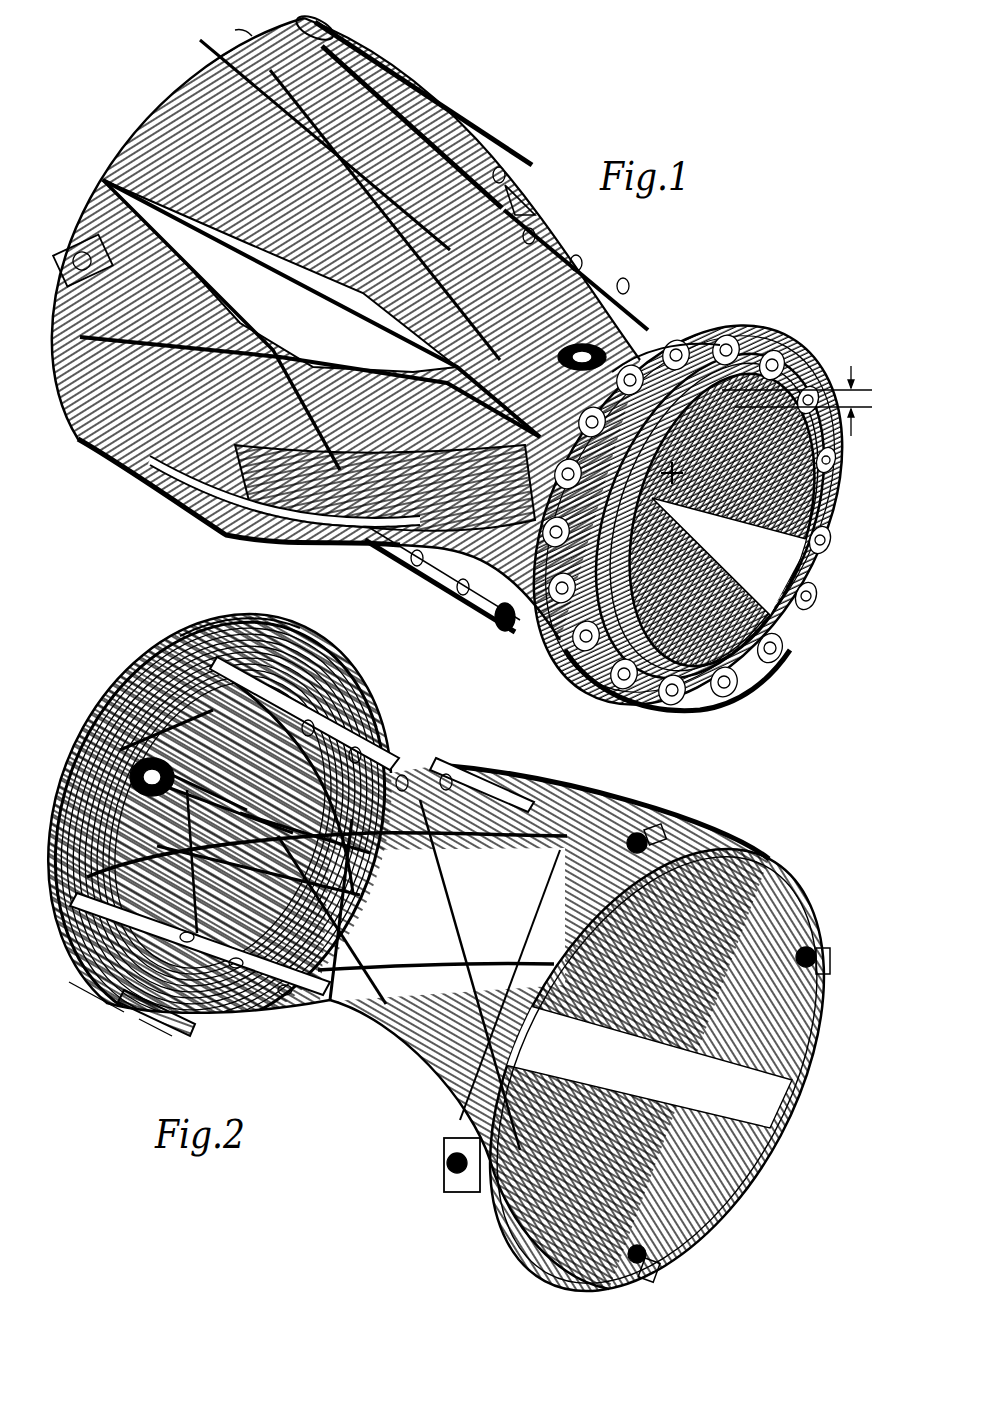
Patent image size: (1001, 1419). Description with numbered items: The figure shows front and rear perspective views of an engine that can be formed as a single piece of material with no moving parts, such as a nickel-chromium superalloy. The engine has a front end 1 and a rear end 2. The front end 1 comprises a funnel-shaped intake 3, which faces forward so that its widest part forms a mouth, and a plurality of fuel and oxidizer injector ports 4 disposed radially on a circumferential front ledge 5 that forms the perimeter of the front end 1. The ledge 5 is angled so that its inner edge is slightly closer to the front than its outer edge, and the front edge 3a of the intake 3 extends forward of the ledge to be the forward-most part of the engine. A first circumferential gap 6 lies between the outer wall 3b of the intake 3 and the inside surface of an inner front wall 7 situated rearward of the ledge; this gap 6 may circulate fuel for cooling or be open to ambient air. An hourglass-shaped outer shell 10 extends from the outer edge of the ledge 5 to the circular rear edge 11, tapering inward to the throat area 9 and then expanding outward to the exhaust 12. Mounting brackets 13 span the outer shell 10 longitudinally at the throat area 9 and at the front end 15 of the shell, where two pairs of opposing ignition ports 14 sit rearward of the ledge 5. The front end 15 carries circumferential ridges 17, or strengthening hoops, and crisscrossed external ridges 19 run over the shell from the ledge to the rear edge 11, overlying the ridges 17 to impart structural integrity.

In FIG. 1, the front end 1 is at (806, 598).
In FIG. 2, the front end 1 is at (86, 722).
In FIG. 1, the rear end 2 is at (96, 160).
In FIG. 2, the rear end 2 is at (795, 1160).
In FIG. 1, the funnel-shaped intake 3 is at (687, 503).
In FIG. 1, the front edge of the intake 3a is at (672, 708).
In FIG. 1, the outer wall of the intake 3b is at (668, 325).
In FIG. 1, the fuel and oxidizer injector ports 4 is at (562, 682).
In FIG. 1, the circumferential front ledge 5 is at (700, 330).
In FIG. 1, the first circumferential gap 6 is at (797, 391).
In FIG. 1, the inner front wall 7 is at (796, 335).
In FIG. 2, the throat area 9 is at (220, 870).
In FIG. 1, the outer shell 10 is at (130, 432).
In FIG. 2, the outer shell 10 is at (635, 830).
In FIG. 2, the rear edge 11 is at (748, 1188).
In FIG. 2, the exhaust 12 is at (474, 1303).
In FIG. 1, the mounting brackets 13 is at (556, 262).
In FIG. 2, the mounting brackets 13 is at (390, 745).
In FIG. 1, the ignition ports 14 is at (590, 343).
In FIG. 2, the front end of the outer shell 15 is at (132, 1009).
In FIG. 2, the circumferential ridges 17 is at (172, 665).
In FIG. 1, the external ridges 19 is at (238, 34).
In FIG. 2, the external ridges 19 is at (220, 655).